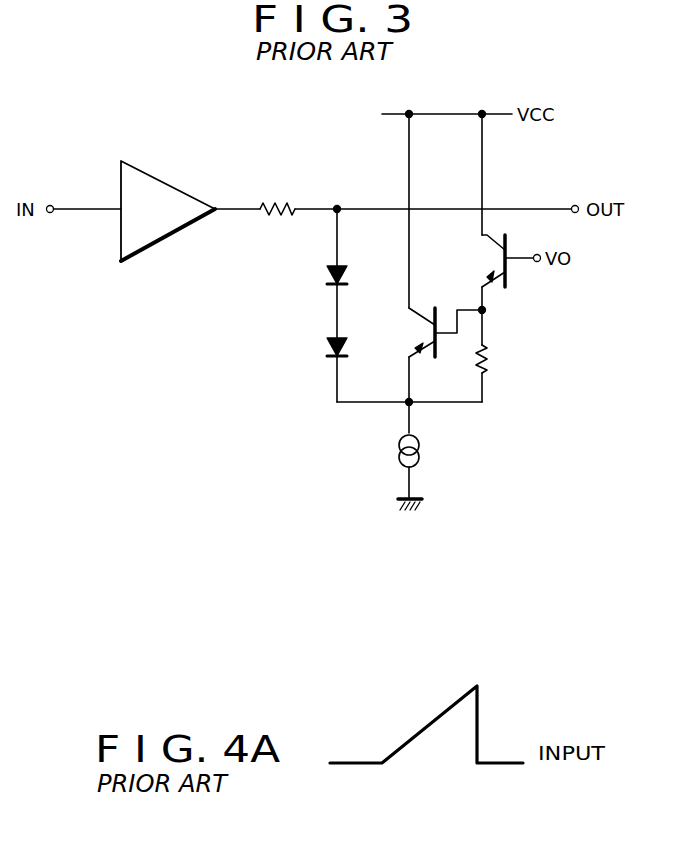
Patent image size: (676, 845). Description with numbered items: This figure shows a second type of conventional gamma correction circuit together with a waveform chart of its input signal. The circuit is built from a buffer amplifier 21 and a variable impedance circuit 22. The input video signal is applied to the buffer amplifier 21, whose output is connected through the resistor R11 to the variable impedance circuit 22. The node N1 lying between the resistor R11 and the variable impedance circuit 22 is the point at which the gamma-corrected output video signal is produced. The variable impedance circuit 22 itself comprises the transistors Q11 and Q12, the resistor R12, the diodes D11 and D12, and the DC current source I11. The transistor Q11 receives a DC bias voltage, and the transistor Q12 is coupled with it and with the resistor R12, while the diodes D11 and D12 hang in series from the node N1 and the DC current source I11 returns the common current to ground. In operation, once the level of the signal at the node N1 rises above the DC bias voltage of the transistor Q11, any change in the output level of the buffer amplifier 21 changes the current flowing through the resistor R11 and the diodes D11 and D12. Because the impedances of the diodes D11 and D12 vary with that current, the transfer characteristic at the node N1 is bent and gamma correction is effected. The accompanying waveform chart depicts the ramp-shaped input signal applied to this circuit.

The buffer amplifier 21 is at (167, 232).
The variable impedance circuit 22 is at (387, 303).
The resistor R11 is at (284, 203).
The resistor R12 is at (485, 361).
The node N1 is at (339, 205).
The diode D11 is at (326, 281).
The diode D12 is at (325, 342).
The transistor Q11 is at (500, 260).
The transistor Q12 is at (430, 334).
The DC current source I11 is at (421, 457).